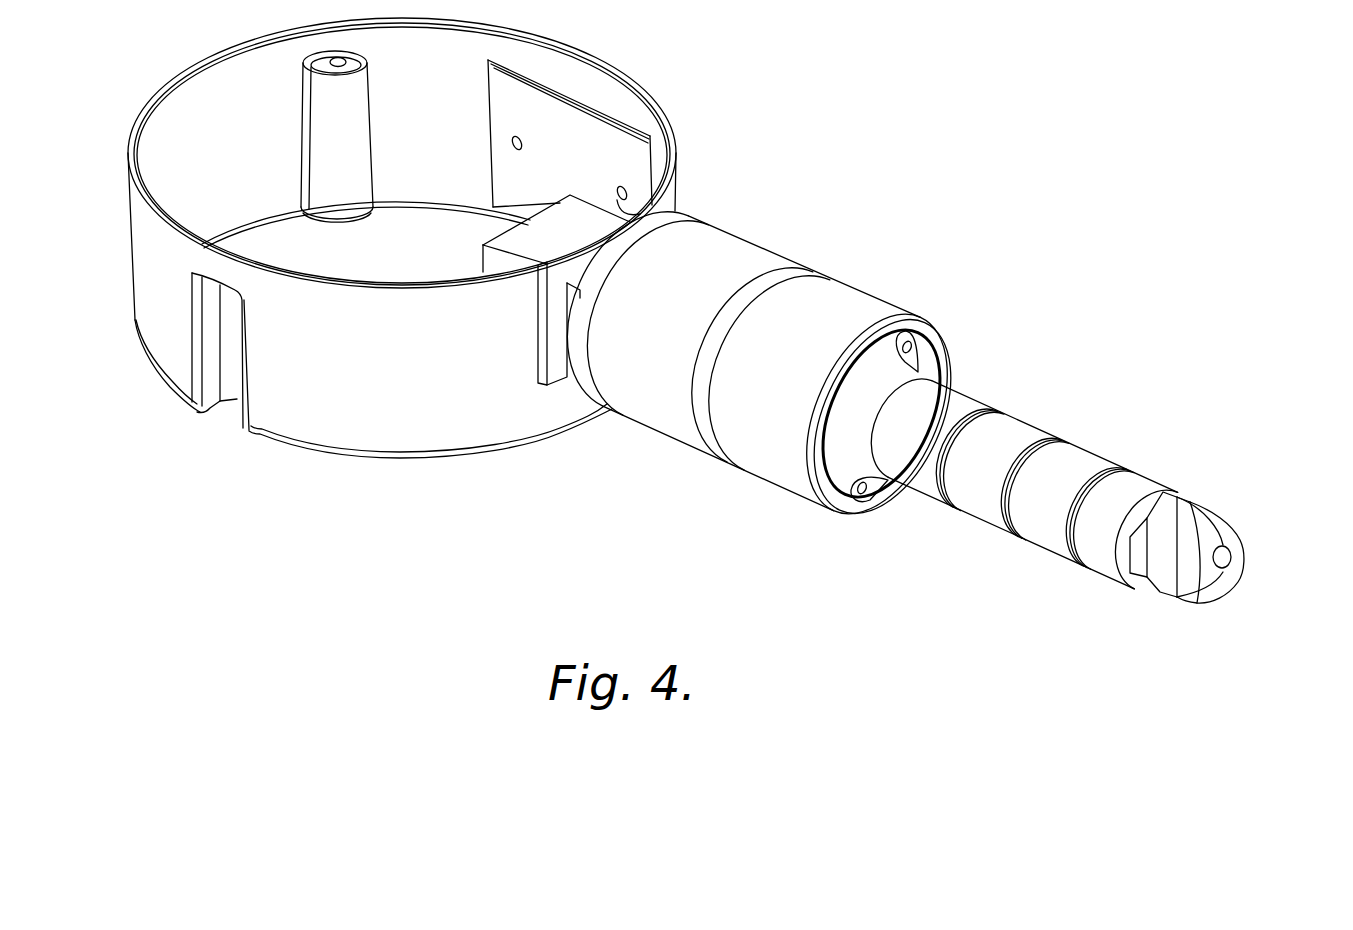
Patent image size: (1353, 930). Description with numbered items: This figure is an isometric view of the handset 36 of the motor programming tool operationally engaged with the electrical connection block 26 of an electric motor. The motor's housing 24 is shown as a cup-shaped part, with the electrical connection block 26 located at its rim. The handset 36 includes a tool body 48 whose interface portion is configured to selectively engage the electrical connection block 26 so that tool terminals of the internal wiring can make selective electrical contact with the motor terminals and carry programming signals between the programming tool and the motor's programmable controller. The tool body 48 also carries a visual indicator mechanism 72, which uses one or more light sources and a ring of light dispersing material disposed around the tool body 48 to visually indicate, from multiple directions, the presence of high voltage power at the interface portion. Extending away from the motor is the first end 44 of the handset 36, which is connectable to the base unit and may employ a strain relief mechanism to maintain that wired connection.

The housing 24 is at (593, 58).
The electrical connection block 26 is at (589, 218).
The handset 36 is at (828, 242).
The tool body 48 is at (868, 305).
The visual indicator mechanism 72 is at (700, 475).
The first end 44 is at (1234, 483).